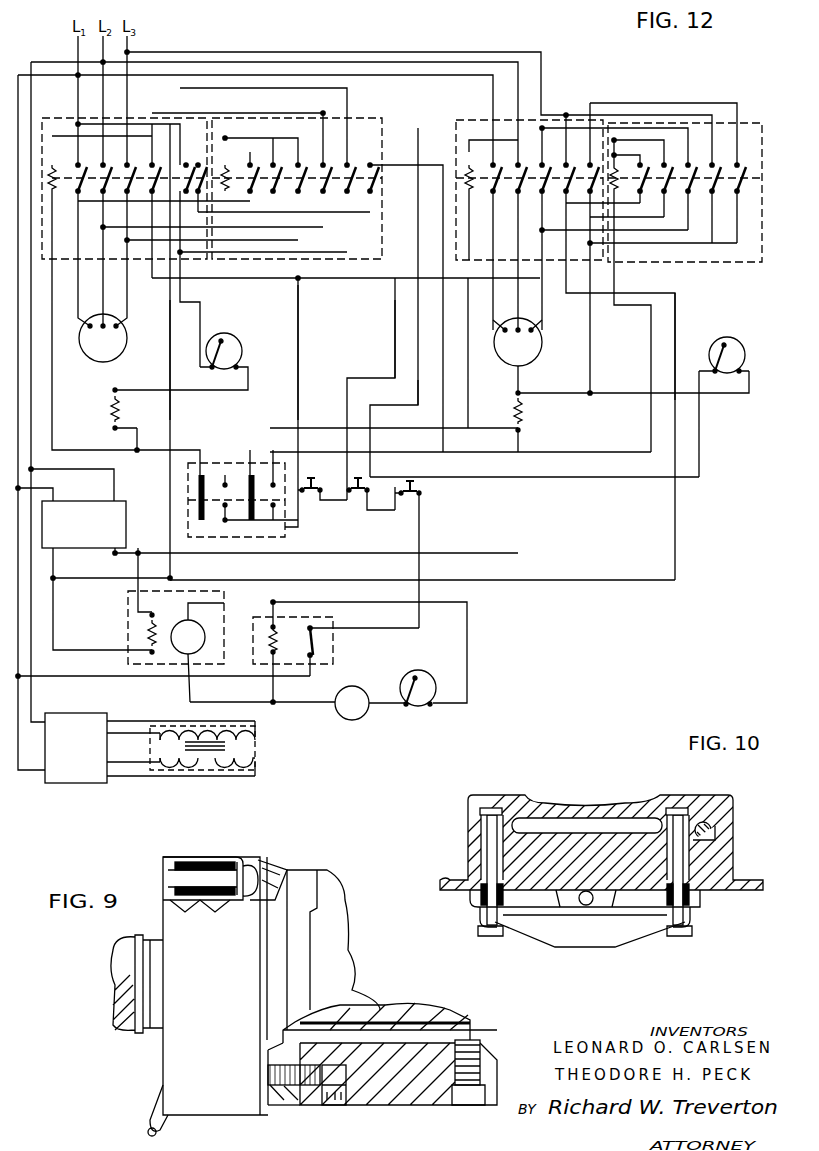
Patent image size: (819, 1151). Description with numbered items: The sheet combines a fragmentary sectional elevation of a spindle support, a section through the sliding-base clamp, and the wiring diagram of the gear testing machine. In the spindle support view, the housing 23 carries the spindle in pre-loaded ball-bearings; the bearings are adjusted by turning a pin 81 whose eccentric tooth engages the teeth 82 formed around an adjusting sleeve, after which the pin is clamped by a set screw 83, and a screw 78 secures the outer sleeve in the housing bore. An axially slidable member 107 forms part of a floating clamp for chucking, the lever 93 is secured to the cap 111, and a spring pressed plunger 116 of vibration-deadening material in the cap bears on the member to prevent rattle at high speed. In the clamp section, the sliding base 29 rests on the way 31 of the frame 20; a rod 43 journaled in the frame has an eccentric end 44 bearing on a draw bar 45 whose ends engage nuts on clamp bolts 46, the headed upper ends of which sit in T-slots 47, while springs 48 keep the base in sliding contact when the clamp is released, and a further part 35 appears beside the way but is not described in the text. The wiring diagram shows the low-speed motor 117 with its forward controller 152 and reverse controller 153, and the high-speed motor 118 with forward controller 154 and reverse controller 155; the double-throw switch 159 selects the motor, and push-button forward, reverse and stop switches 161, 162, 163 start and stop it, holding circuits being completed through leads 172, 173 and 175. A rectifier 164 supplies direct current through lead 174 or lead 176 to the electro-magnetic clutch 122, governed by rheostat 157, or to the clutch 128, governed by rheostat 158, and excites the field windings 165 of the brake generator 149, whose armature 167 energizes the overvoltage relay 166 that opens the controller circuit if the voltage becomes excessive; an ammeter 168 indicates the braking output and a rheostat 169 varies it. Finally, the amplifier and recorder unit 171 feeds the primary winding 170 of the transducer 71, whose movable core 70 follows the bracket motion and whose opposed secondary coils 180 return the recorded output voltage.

In FIG. 12, the forward controller 154 is at (130, 120).
In FIG. 12, the reverse controller 155 is at (360, 120).
In FIG. 12, the forward controller 152 is at (556, 120).
In FIG. 12, the reverse controller 153 is at (725, 123).
In FIG. 12, the high-speed motor 118 is at (115, 351).
In FIG. 12, the low-speed motor 117 is at (530, 355).
In FIG. 12, the rheostat 158 is at (236, 336).
In FIG. 12, the rheostat 157 is at (738, 338).
In FIG. 12, the lead 173 is at (300, 330).
In FIG. 12, the lead 174 is at (678, 303).
In FIG. 12, the lead 175 is at (362, 378).
In FIG. 12, the lead 172 is at (395, 404).
In FIG. 12, the lead 176 is at (168, 356).
In FIG. 12, the coupling 128 is at (108, 412).
In FIG. 12, the electro-magnetic clutch 122 is at (528, 412).
In FIG. 12, the double-throw switch 159 is at (236, 462).
In FIG. 12, the forward switch 161 is at (314, 480).
In FIG. 12, the reverse switch 162 is at (362, 480).
In FIG. 12, the stop switch 163 is at (416, 492).
In FIG. 12, the rectifier 164 is at (95, 533).
In FIG. 12, the electric generator 149 is at (224, 603).
In FIG. 12, the field windings 165 is at (140, 640).
In FIG. 12, the armature 167 is at (200, 646).
In FIG. 12, the overvoltage relay 166 is at (336, 658).
In FIG. 12, the rheostat 169 is at (424, 676).
In FIG. 12, the ammeter 168 is at (363, 715).
In FIG. 12, the amplifier and recorder unit 171 is at (88, 755).
In FIG. 12, the movable core 70 is at (200, 742).
In FIG. 12, the primary coil 170 is at (255, 735).
In FIG. 12, the opposed secondary coils 180 is at (185, 768).
In FIG. 12, the electro-magnetic transducer 71 is at (155, 775).
In FIG. 10, the frame 20 is at (448, 882).
In FIG. 10, the sliding base 29 is at (556, 816).
In FIG. 10, the clamp bolts 46 is at (490, 855).
In FIG. 10, the T-slots 47 is at (490, 808).
In FIG. 10, the screw 35 is at (705, 820).
In FIG. 10, the way 31 is at (712, 832).
In FIG. 10, the springs 48 is at (480, 905).
In FIG. 10, the rod 43 is at (572, 907).
In FIG. 10, the draw bar 45 is at (580, 938).
In FIG. 10, the eccentric end 44 is at (592, 905).
In FIG. 9, the cap 111 is at (168, 1050).
In FIG. 9, the lever 93 is at (150, 1108).
In FIG. 9, the spring pressed plunger 116 is at (238, 870).
In FIG. 9, the member 107 is at (262, 866).
In FIG. 9, the teeth 82 is at (375, 1017).
In FIG. 9, the housing 23 is at (380, 1100).
In FIG. 9, the screw 78 is at (478, 1060).
In FIG. 9, the set screw 83 is at (300, 1095).
In FIG. 9, the pin 81 is at (334, 1108).